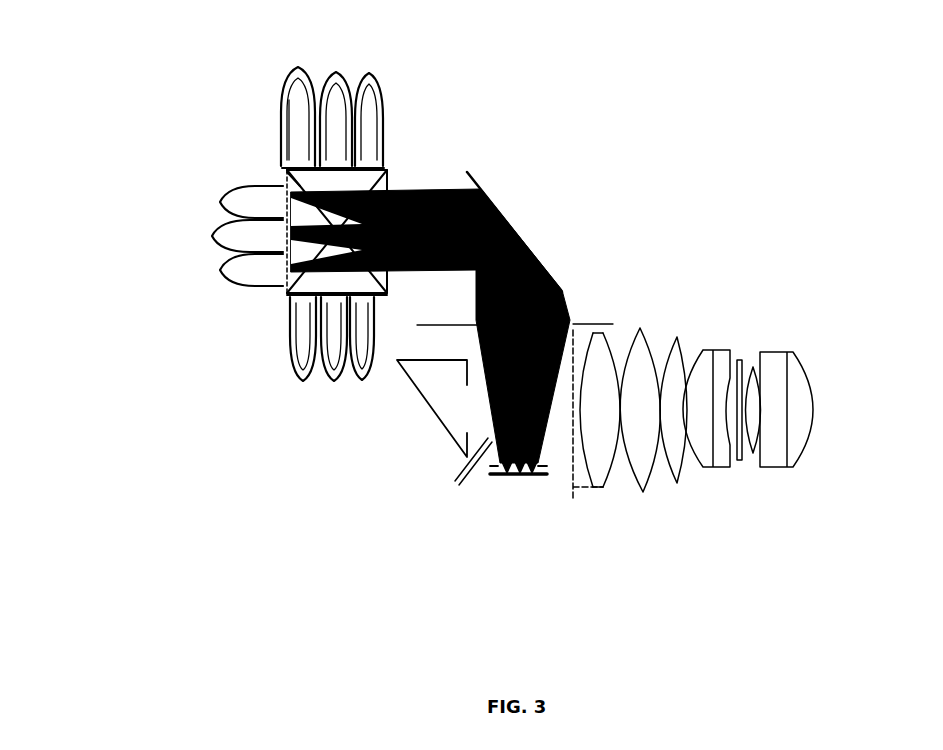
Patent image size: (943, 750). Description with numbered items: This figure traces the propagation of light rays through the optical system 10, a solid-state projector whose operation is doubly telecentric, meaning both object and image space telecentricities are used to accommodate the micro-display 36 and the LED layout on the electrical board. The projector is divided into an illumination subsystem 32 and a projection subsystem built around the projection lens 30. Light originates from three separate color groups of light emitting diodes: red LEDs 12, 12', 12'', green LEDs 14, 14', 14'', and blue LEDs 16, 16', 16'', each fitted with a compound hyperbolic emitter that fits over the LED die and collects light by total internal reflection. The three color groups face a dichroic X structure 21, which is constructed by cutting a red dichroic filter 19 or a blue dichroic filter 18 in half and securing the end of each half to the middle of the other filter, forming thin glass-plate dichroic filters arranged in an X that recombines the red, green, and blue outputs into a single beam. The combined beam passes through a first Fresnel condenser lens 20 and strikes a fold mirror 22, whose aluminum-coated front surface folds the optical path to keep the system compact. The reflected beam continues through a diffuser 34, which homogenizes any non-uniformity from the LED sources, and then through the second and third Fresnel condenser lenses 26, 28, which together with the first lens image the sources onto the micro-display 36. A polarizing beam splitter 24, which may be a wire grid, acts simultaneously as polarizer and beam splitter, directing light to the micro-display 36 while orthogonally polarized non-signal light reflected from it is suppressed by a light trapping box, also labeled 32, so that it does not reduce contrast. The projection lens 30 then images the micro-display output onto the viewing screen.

The optical system 10 is at (100, 160).
The red light emitting diode 12 is at (351, 105).
The red light emitting diode 12' is at (279, 113).
The red light emitting diode 12'' is at (393, 113).
The green light emitting diode 14 is at (234, 269).
The green light emitting diode 14' is at (231, 202).
The green light emitting diode 14'' is at (251, 294).
The blue light emitting diode 16 is at (311, 365).
The blue light emitting diode 16' is at (274, 359).
The blue light emitting diode 16'' is at (343, 364).
The blue dichroic filter 18 is at (380, 175).
The red dichroic filter 19 is at (285, 105).
The Fresnel condenser lens 20 is at (505, 338).
The dichroic X structure 21 is at (277, 182).
The fold mirror 22 is at (478, 177).
The polarizing beam splitter 24 is at (457, 484).
The Fresnel condenser lens 26 is at (573, 333).
The Fresnel condenser lens 28 is at (580, 338).
The projection lens 30 is at (686, 536).
The illumination subsystem 32 is at (427, 412).
The diffuser 34 is at (467, 353).
The micro-display 36 is at (497, 478).